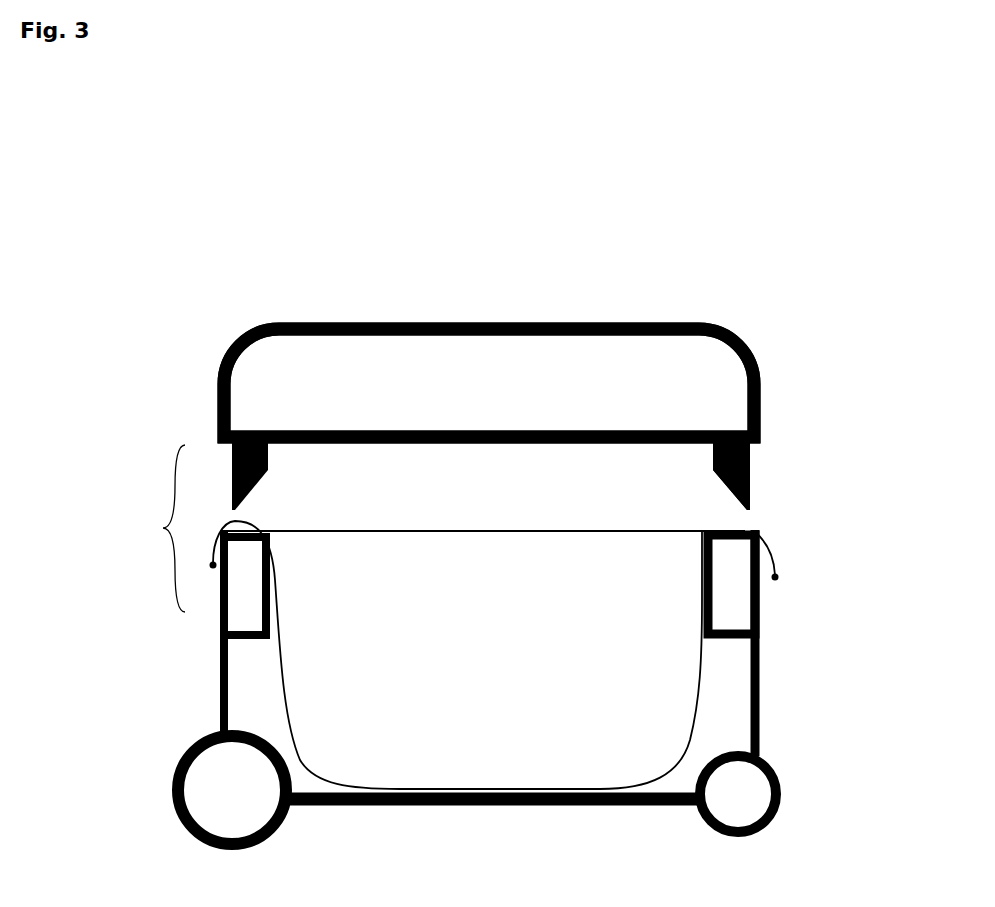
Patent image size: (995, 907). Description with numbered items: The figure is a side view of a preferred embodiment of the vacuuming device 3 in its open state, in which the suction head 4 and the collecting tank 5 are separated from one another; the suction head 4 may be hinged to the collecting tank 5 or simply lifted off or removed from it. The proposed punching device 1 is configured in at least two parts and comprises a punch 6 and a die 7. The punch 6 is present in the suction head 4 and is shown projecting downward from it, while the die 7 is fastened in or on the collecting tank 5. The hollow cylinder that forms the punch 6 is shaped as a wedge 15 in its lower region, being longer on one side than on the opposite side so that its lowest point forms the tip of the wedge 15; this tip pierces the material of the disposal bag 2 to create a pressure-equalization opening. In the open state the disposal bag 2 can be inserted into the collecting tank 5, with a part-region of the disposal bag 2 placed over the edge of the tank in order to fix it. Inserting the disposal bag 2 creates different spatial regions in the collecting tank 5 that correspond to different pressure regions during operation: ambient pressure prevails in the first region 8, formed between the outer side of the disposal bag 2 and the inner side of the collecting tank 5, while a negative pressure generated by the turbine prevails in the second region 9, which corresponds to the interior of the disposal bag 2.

The punching device 1 is at (160, 528).
The disposal bag 2 is at (705, 690).
The vacuuming device 3 is at (488, 291).
The suction head 4 is at (705, 363).
The collecting tank 5 is at (215, 712).
The punch 6 is at (755, 471).
The die 7 is at (732, 608).
The first region 8 is at (258, 673).
The second region 9 is at (521, 762).
The wedge 15 is at (756, 505).